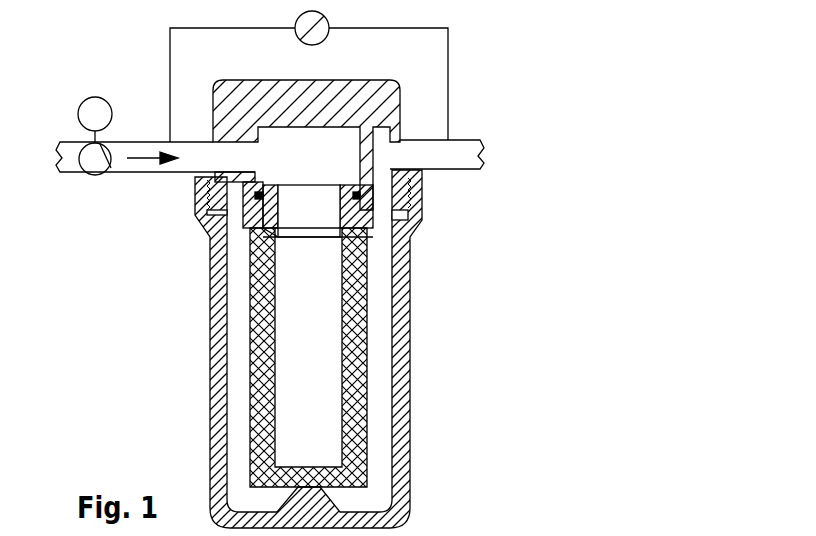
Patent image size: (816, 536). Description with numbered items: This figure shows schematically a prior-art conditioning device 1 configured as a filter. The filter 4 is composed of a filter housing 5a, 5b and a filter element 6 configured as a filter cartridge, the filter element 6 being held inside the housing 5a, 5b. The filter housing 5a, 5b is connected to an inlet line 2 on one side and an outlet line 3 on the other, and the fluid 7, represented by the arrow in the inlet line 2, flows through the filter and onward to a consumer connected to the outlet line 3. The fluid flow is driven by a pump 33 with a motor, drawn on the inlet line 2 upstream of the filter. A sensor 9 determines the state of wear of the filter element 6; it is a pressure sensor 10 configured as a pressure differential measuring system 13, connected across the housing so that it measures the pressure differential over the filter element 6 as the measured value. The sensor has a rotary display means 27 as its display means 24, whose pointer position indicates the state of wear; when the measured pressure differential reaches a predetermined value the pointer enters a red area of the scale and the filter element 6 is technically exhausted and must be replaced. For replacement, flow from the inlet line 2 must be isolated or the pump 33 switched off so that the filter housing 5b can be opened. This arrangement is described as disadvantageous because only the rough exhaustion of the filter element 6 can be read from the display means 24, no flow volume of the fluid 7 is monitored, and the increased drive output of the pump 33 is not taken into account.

The conditioning device 1 is at (342, 349).
The filter 4 is at (342, 349).
The filter housing 5a is at (396, 80).
The filter housing 5b is at (410, 318).
The filter element 6 is at (367, 458).
The inlet line 2 is at (155, 172).
The outlet line 3 is at (458, 169).
The fluid 7 is at (132, 157).
The pump 33 is at (100, 173).
The sensor 9 is at (255, 71).
The pressure sensor 10 is at (255, 71).
The pressure differential measuring system 13 is at (255, 71).
The display means 24 is at (255, 71).
The rotary display means 27 is at (296, 24).